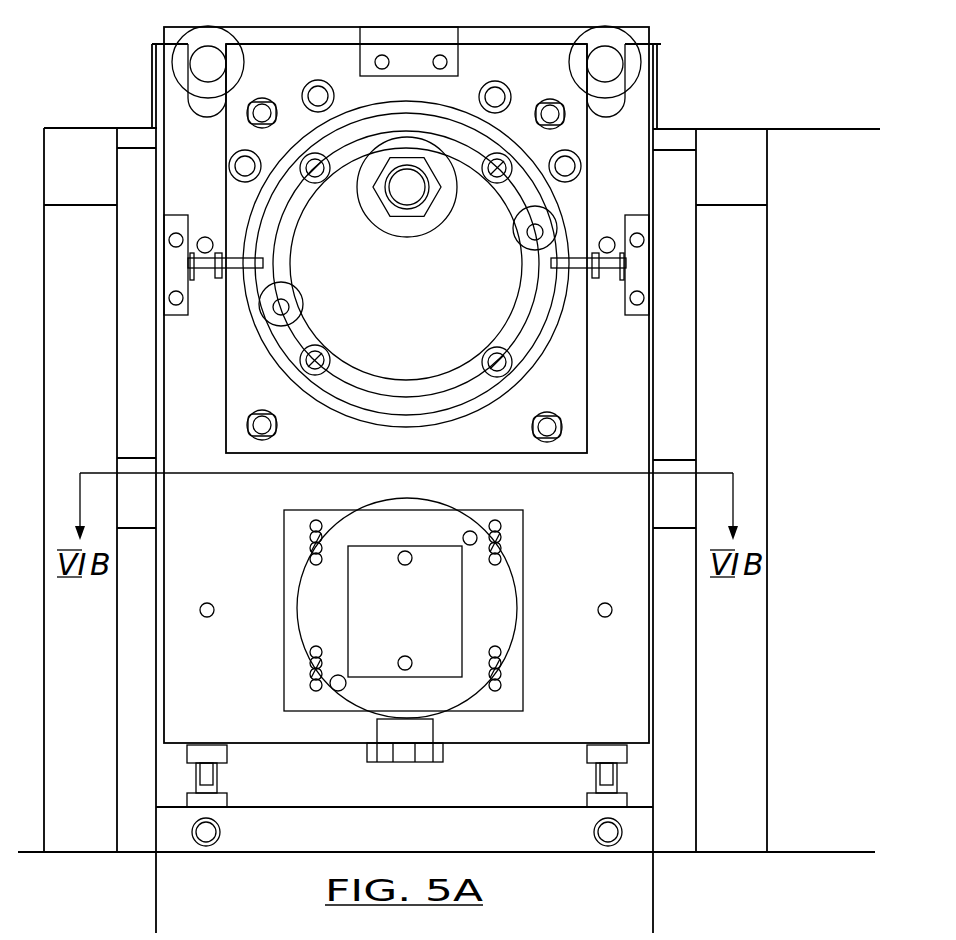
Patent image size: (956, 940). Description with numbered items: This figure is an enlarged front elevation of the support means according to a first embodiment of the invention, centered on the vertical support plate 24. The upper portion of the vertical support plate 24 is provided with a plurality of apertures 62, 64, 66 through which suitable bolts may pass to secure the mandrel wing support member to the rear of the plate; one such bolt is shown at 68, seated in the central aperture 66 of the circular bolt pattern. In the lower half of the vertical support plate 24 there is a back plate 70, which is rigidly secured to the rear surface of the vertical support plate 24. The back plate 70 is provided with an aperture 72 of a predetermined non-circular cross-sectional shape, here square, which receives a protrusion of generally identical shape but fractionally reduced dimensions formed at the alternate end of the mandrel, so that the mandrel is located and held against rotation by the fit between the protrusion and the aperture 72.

The vertical support plate 24 is at (465, 394).
The aperture 62 is at (304, 305).
The aperture 64 is at (527, 245).
The aperture 66 is at (385, 232).
The bolt 68 is at (433, 215).
The back plate 70 is at (513, 530).
The aperture 72 is at (345, 593).